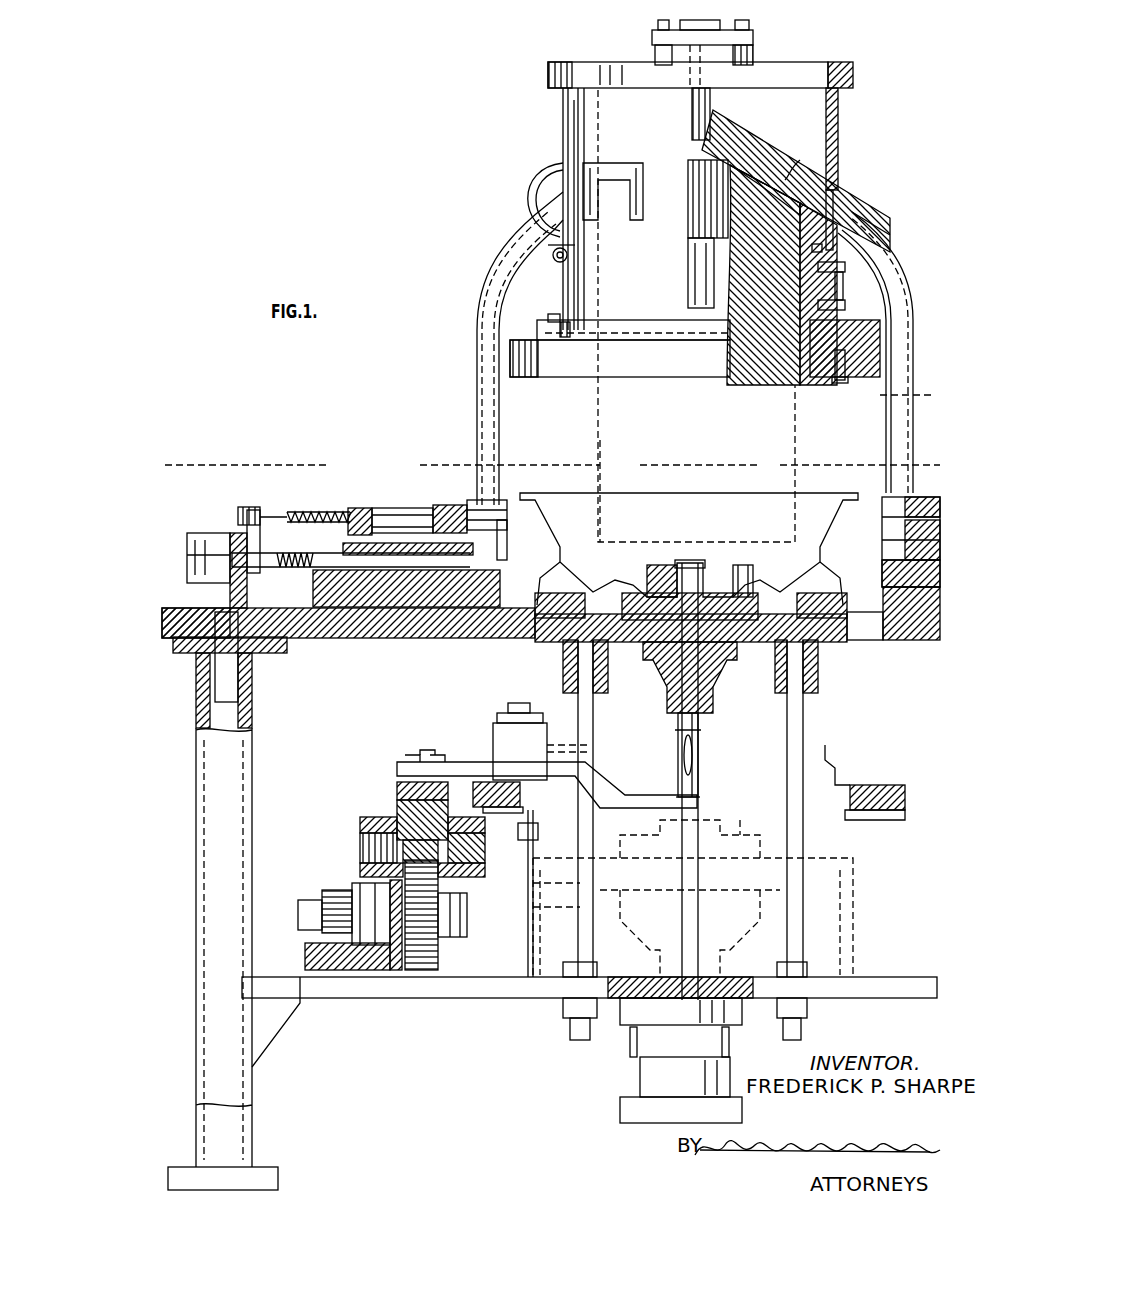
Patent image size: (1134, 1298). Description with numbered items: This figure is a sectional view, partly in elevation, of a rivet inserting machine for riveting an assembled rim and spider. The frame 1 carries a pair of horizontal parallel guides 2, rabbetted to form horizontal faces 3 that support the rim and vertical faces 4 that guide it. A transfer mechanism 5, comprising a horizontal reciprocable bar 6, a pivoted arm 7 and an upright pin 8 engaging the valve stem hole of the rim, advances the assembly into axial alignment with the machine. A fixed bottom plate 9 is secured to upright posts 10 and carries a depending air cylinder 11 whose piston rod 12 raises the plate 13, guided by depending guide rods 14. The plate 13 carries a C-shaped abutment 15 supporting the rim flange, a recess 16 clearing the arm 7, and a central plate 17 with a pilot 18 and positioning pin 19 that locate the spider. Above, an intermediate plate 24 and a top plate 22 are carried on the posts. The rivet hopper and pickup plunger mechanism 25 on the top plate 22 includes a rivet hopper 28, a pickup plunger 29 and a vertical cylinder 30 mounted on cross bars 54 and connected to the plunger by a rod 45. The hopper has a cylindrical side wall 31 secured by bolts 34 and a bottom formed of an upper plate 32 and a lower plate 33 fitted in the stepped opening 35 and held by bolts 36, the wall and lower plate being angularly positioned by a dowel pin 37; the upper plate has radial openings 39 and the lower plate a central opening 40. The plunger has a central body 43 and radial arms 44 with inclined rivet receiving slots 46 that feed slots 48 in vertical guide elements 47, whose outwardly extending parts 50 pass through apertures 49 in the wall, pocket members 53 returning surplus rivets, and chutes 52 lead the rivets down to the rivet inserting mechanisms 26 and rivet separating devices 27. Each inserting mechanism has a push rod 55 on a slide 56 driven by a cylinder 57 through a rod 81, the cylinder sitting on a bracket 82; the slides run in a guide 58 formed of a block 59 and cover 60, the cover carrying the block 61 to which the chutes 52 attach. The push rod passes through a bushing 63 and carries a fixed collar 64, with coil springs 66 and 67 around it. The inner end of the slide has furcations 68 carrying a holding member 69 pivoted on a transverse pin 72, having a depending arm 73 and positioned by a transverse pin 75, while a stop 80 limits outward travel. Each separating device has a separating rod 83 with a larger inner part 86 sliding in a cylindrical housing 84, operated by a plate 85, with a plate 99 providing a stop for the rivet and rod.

The frame 1 is at (520, 901).
The horizontal parallel guides 2 is at (895, 785).
The horizontal longitudinally extending faces 3 is at (845, 790).
The vertical longitudinally extending faces 4 is at (855, 790).
The transfer mechanism 5 is at (374, 808).
The horizontal reciprocable bar 6 is at (410, 822).
The arm 7 is at (179, 470).
The upright pin 8 is at (521, 335).
The bottom plate 9 is at (378, 999).
The upright posts 10 is at (252, 818).
The fluid pressure actuated cylinder 11 is at (660, 1066).
The piston rod 12 is at (700, 780).
The plate 13 is at (630, 642).
The depending guide rods 14 is at (782, 128).
The C-shaped abutment 15 is at (872, 208).
The recess 16 is at (932, 397).
The central plate 17 is at (643, 583).
The pilot 18 is at (655, 566).
The positioning pin 19 is at (753, 587).
The top plate 22 is at (545, 377).
The intermediate plate 24 is at (482, 640).
The rivet hopper and pickup plunger mechanism 25 is at (552, 112).
The rivet inserting mechanism 26 is at (306, 578).
The rivet separating devices 27 is at (344, 502).
The rivet hopper 28 is at (572, 145).
The rivet pickup plunger 29 is at (800, 160).
The vertical fluid pressure actuated cylinder 30 is at (652, 33).
The cylindrical side wall 31 is at (853, 108).
The upper plate 32 is at (838, 318).
The lower plate 33 is at (830, 380).
The bolts 34 is at (500, 311).
The central stepped opening 35 is at (760, 385).
The bolts 36 is at (840, 380).
The dowel pin 37 is at (690, 320).
The radial openings 39 is at (790, 330).
The central opening 40 is at (803, 332).
The central body 43 is at (748, 140).
The radial arms 44 is at (775, 180).
The rod 45 is at (712, 112).
The rivet receiving slots 46 is at (845, 176).
The vertical rivet guide elements 47 is at (868, 208).
The rivet receiving slots 48 is at (880, 190).
The angularly spaced apertures 49 is at (620, 165).
The outwardly extending parts 50 is at (558, 260).
The chutes 52 is at (477, 402).
The pocket members 53 is at (528, 188).
The cross bars 54 is at (753, 55).
The push rod 55 is at (270, 557).
The slide 56 is at (347, 600).
The fluid pressure actuated cylinder 57 is at (210, 535).
The guide 58 is at (415, 615).
The block 59 is at (390, 605).
The cover 60 is at (355, 546).
The block 61 is at (478, 500).
The bushing 63 is at (305, 548).
The fixed collar 64 is at (360, 508).
The coil spring 66 is at (365, 600).
The coil spring 67 is at (210, 587).
The furcations 68 is at (485, 580).
The holding member 69 is at (485, 573).
The transverse pin 72 is at (505, 545).
The depending arm 73 is at (483, 575).
The transverse pin 75 is at (508, 571).
The stop 80 is at (277, 593).
The rod 81 is at (236, 540).
The bracket 82 is at (252, 515).
The separating rod 83 is at (292, 512).
The cylindrical housing 84 is at (390, 510).
The plate 85 is at (262, 513).
The inner cylindrical part 86 is at (448, 505).
The plate 99 is at (478, 468).